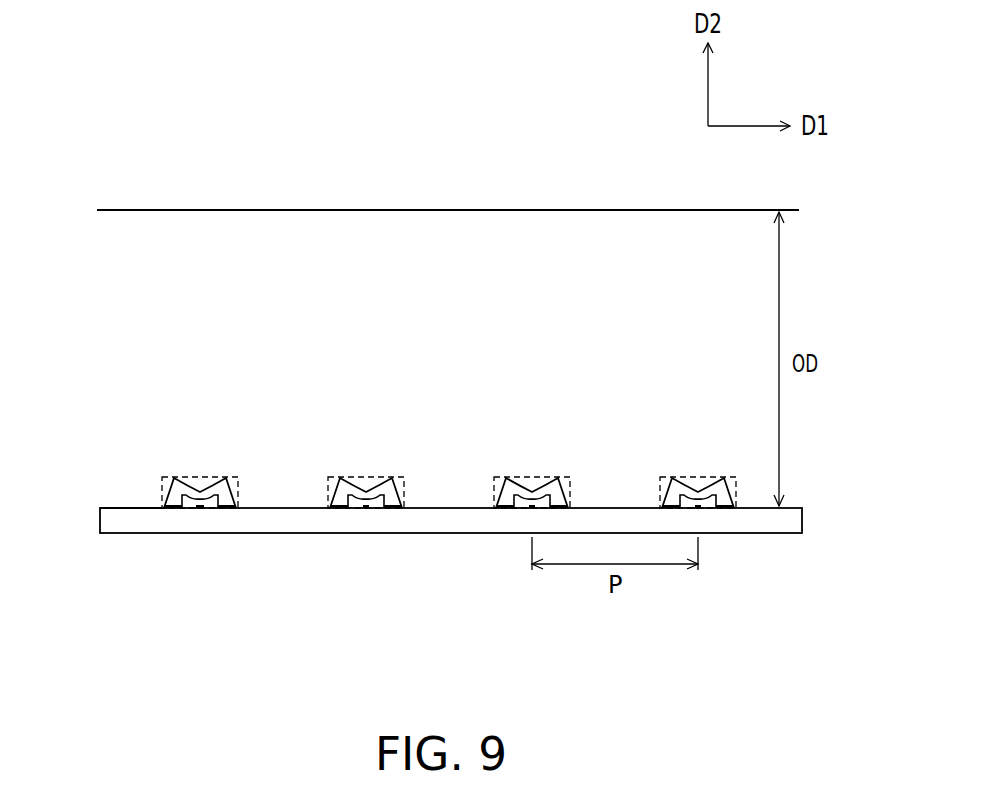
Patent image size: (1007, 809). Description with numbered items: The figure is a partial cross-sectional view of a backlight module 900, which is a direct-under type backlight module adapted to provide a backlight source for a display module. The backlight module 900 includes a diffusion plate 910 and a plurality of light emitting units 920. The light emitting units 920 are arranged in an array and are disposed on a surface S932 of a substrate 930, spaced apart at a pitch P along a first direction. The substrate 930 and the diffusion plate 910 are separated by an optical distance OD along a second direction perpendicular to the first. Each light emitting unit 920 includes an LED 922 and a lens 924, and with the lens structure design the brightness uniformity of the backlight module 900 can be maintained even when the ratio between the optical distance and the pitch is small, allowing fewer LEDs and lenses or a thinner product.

The backlight module 900 is at (858, 618).
The diffusion plate 910 is at (147, 223).
The light emitting unit 920 is at (203, 477).
The LED 922 is at (198, 511).
The lens 924 is at (165, 503).
The substrate 930 is at (153, 523).
The surface of substrate S932 is at (131, 495).